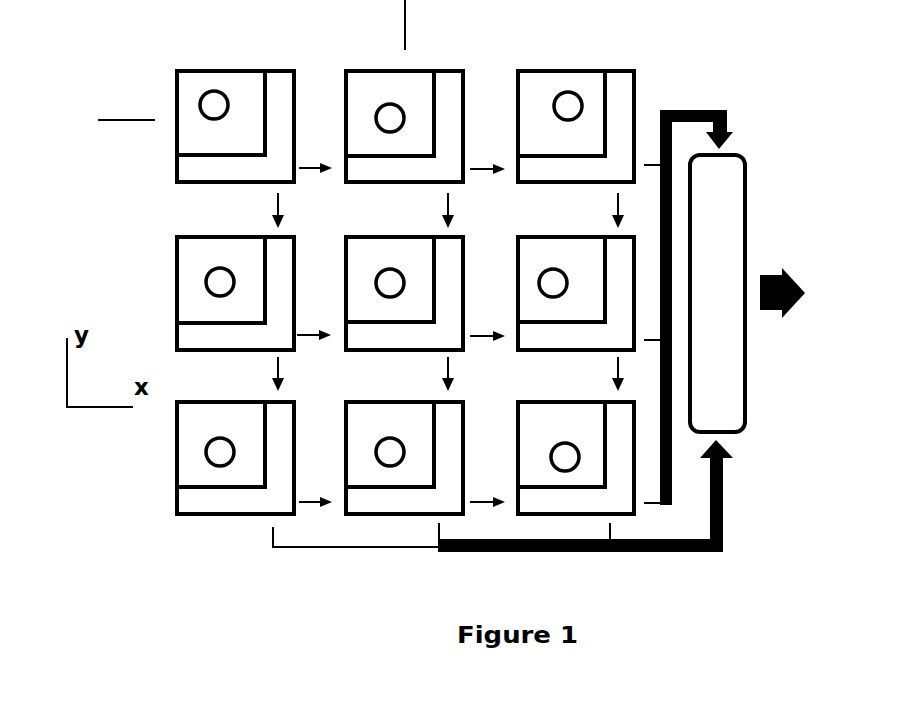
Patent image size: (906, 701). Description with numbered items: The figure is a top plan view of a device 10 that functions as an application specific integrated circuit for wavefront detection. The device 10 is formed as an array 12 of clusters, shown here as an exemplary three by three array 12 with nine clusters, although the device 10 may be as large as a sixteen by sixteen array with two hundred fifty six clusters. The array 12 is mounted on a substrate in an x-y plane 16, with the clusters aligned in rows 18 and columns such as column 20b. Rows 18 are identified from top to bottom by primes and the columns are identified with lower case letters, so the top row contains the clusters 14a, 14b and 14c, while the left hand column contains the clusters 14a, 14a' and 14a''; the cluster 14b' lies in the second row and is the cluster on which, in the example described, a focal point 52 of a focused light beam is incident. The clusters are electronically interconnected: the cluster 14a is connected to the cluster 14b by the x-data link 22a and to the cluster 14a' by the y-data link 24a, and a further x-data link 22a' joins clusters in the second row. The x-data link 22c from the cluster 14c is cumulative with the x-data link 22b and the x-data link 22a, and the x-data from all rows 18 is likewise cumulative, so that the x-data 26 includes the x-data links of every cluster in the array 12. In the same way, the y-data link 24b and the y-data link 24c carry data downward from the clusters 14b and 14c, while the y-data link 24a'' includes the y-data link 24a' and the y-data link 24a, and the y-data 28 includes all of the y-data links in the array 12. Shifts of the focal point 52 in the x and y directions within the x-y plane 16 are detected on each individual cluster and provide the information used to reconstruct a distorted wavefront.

The device 10 is at (718, 82).
The array 12 is at (195, 210).
The cluster 14a is at (235, 103).
The cluster 14b is at (415, 110).
The cluster 14c is at (565, 70).
The cluster 14a' is at (201, 293).
The cluster 14b' is at (404, 309).
The cluster 14a'' is at (226, 480).
The x-y plane 16 is at (409, 219).
The rows 18 is at (116, 120).
The column 20b is at (405, 13).
The x-data link 22a is at (321, 198).
The x-data link 22b is at (476, 168).
The x-data link 22c is at (648, 168).
The x-data link 22a' is at (319, 356).
The y-data link 24a is at (249, 208).
The y-data link 24b is at (456, 196).
The y-data link 24c is at (615, 212).
The y-data link 24a' is at (244, 374).
The y-data link 24a'' is at (355, 566).
The x-data 26 is at (725, 112).
The y-data 28 is at (723, 538).
The focal point 52 is at (205, 92).